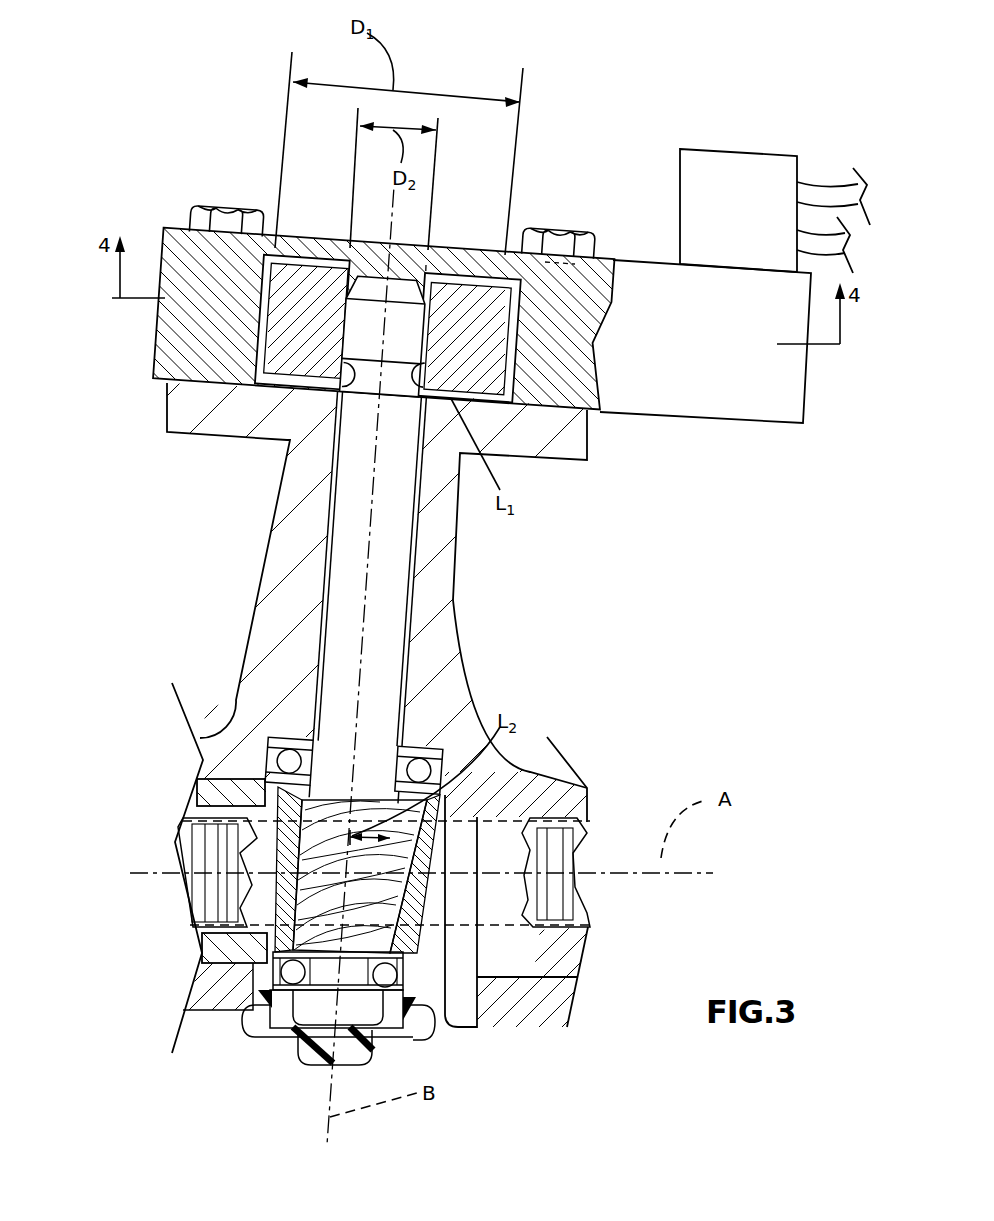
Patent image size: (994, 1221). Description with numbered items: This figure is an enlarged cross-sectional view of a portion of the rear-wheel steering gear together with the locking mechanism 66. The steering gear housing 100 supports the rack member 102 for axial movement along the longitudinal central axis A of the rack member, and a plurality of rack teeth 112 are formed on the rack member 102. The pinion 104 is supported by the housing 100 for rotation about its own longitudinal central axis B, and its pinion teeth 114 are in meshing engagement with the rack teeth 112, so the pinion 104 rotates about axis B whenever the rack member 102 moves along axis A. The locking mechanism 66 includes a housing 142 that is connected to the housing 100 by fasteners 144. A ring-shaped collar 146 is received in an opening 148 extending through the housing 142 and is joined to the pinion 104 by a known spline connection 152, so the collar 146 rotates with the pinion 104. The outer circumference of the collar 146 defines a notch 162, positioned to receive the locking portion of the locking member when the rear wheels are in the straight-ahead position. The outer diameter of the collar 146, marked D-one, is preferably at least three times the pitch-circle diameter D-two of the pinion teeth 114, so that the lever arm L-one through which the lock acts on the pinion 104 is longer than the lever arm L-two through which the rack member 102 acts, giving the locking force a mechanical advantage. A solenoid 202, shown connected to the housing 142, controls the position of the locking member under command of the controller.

The locking mechanism 66 is at (148, 96).
The housing 100 is at (540, 423).
The rack member 102 is at (503, 933).
The pinion 104 is at (383, 633).
The rack teeth 112 is at (200, 853).
The pinion teeth 114 is at (363, 890).
The housing 142 is at (558, 365).
The fasteners 144 is at (222, 212).
The collar 146 is at (467, 295).
The opening 148 is at (263, 282).
The spline connection 152 is at (456, 250).
The notch 162 is at (510, 335).
The solenoid 202 is at (748, 142).